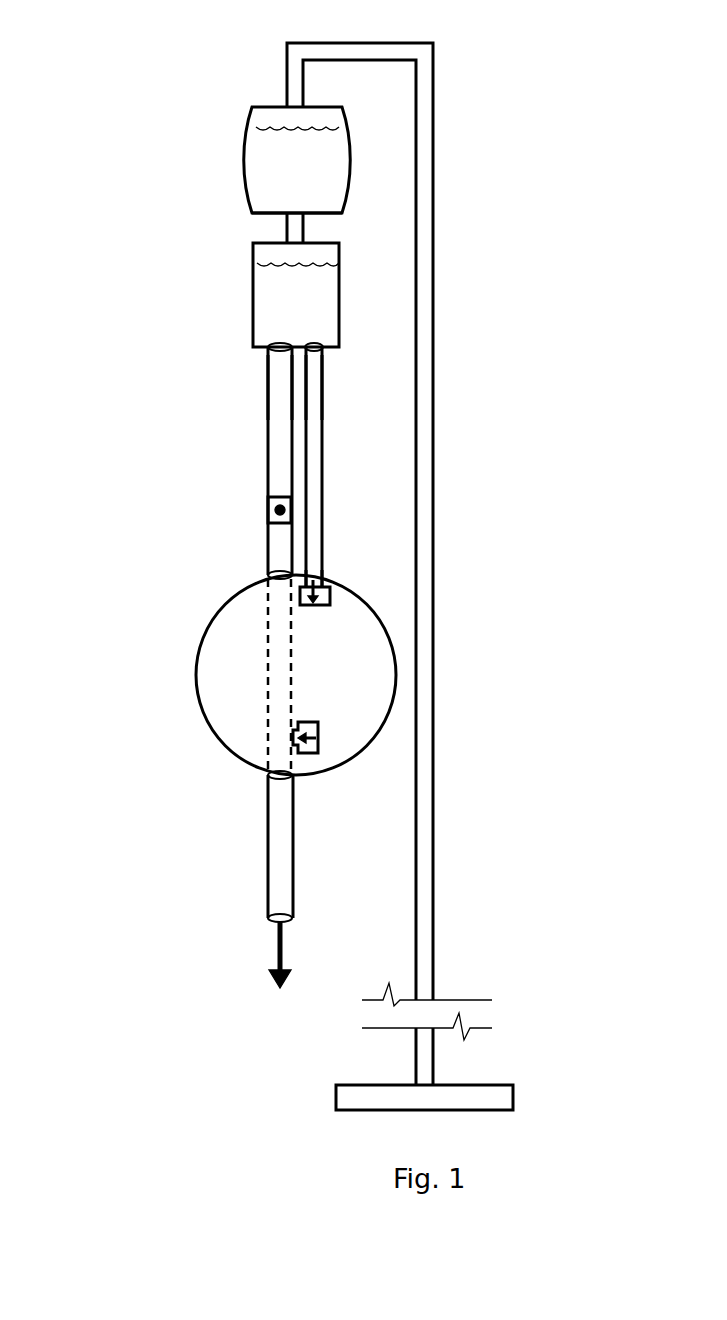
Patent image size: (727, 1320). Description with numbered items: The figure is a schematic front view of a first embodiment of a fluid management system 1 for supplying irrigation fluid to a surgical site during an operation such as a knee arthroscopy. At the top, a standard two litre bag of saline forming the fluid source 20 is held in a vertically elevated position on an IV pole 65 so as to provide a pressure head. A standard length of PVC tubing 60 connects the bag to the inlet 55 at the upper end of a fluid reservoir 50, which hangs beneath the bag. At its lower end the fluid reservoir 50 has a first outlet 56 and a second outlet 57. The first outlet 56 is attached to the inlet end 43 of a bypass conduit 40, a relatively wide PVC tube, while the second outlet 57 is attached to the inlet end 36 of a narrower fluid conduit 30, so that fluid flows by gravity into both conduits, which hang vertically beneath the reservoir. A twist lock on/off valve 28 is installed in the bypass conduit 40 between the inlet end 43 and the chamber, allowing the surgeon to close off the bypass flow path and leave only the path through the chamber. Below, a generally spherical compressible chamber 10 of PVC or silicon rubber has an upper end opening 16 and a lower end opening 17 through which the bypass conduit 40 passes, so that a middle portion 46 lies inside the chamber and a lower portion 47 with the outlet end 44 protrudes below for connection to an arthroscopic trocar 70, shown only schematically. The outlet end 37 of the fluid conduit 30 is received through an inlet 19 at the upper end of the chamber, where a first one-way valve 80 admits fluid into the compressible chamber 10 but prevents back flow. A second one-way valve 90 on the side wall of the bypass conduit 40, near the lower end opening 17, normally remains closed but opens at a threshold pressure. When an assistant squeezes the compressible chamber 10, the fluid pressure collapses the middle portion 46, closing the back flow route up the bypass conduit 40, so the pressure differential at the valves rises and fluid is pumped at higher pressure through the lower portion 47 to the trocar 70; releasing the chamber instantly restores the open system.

The fluid management system 1 is at (118, 52).
The compressible chamber 10 is at (196, 655).
The upper end opening 16 is at (275, 578).
The lower end opening 17 is at (268, 783).
The inlet 19 is at (312, 575).
The fluid source 20 is at (245, 150).
The twist lock on/off valve 28 is at (265, 513).
The fluid conduit 30 is at (330, 463).
The inlet end 36 is at (318, 362).
The outlet end 37 is at (325, 576).
The bypass conduit 40 is at (265, 432).
The inlet end 43 is at (272, 357).
The outlet end 44 is at (275, 912).
The middle portion 46 is at (268, 695).
The lower portion 47 is at (275, 840).
The fluid reservoir 50 is at (253, 290).
The inlet 55 is at (290, 233).
The first outlet 56 is at (268, 332).
The second outlet 57 is at (316, 343).
The PVC tubing 60 is at (257, 215).
The IV pole 65 is at (434, 231).
The arthroscopic trocar 70 is at (270, 950).
The first one-way valve 80 is at (318, 606).
The second one-way valve 90 is at (320, 725).